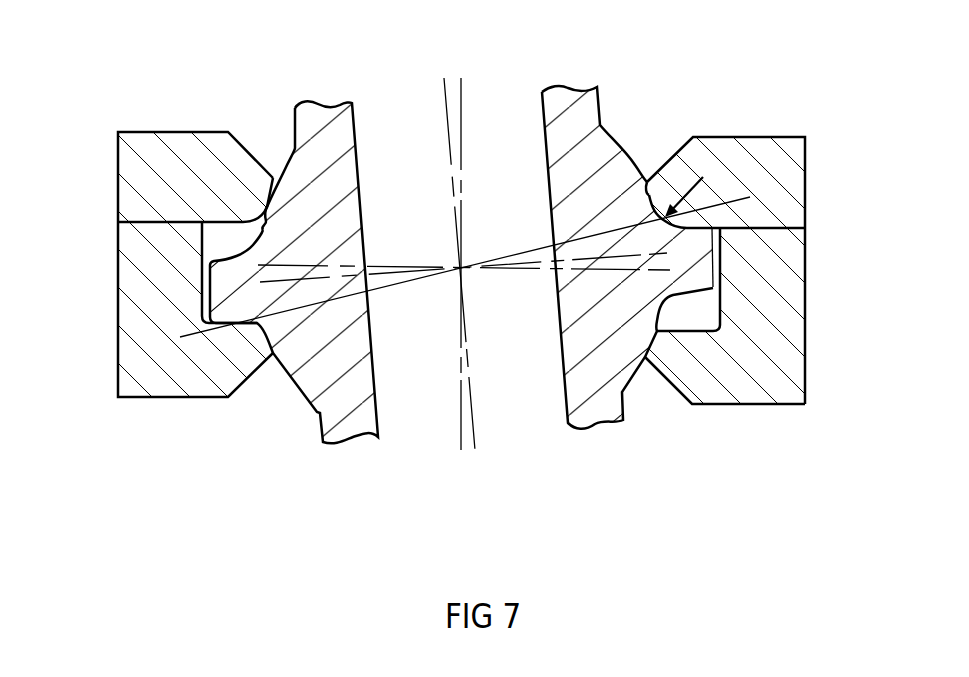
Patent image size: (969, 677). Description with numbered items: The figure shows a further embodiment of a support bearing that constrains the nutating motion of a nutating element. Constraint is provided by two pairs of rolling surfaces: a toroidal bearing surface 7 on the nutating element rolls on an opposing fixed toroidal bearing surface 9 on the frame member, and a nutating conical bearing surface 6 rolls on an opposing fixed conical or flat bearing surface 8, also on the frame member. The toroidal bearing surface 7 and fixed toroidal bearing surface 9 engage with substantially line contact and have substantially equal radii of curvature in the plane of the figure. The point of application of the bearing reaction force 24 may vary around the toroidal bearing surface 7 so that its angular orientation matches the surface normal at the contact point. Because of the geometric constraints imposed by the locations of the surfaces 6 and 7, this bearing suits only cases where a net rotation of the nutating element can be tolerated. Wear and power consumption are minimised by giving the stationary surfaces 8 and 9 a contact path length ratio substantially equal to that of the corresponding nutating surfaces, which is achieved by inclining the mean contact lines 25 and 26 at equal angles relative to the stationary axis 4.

The stationary axis 4 is at (462, 103).
The nutating conical bearing surface 6 is at (722, 315).
The toroidal bearing surface 7 is at (243, 222).
The fixed conical or flat bearing surface 8 is at (687, 333).
The fixed toroidal bearing surface 9 is at (254, 207).
The bearing reaction force 24 is at (668, 212).
The mean contact line 25 is at (298, 310).
The mean contact line 26 is at (727, 198).